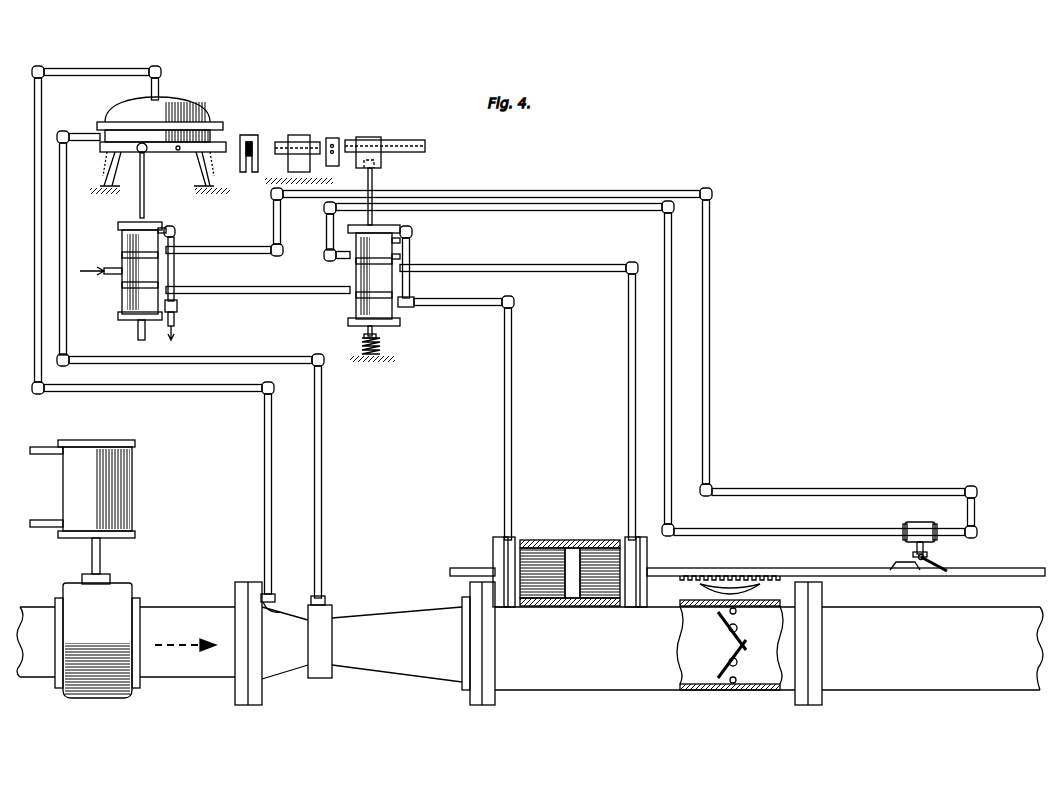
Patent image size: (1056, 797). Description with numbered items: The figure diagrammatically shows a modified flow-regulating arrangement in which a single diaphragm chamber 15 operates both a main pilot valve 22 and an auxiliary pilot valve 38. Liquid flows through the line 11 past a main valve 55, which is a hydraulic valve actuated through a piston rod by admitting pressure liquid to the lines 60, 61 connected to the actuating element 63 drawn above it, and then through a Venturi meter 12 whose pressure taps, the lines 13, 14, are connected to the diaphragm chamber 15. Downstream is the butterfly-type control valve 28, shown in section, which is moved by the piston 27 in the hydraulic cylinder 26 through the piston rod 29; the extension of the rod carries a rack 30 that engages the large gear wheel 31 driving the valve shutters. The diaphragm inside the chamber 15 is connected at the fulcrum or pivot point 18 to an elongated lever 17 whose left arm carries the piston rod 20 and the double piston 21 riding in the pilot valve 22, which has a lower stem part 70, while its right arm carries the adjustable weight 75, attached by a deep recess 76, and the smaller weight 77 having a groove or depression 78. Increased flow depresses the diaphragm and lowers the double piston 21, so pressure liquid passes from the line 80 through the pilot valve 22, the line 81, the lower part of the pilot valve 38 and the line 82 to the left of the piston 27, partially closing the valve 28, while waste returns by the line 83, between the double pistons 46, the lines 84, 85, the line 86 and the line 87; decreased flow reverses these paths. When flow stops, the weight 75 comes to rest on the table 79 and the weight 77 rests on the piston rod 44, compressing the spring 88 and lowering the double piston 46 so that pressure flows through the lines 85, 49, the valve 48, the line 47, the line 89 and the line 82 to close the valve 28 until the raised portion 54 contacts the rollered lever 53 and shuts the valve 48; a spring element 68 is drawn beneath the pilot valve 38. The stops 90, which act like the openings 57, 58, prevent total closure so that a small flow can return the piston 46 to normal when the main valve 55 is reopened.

The line 11 is at (200, 678).
The Venturi meter 12 is at (384, 668).
The line 13 is at (154, 66).
The line 14 is at (322, 545).
The diaphragm chamber 15 is at (182, 101).
The lever 17 is at (405, 140).
The fulcrum or pivot point 18 is at (176, 151).
The piston rod 20 is at (145, 196).
The double piston 21 is at (122, 254).
The pilot valve 22 is at (132, 222).
The cylinder 26 is at (536, 546).
The piston 27 is at (574, 555).
The control valve 28 is at (746, 690).
The piston rod 29 is at (666, 568).
The rack 30 is at (762, 576).
The gear wheel 31 is at (730, 584).
The pilot valve 38 is at (400, 228).
The piston rod 44 is at (378, 328).
The double piston 46 is at (400, 257).
The line 47 is at (772, 530).
The valve 48 is at (922, 528).
The line 49 is at (281, 216).
The rollered lever 53 is at (950, 570).
The raised portion 54 is at (892, 571).
The main valve 55 is at (92, 702).
The opening 57 is at (746, 637).
The opening 58 is at (746, 658).
The line 60 is at (42, 518).
The line 61 is at (46, 445).
The cylinder 63 is at (112, 496).
The spring 68 is at (382, 346).
The valve stem 70 is at (138, 336).
The weight 75 is at (258, 140).
The recess 76 is at (296, 140).
The weight 77 is at (360, 140).
The groove or depression 78 is at (374, 170).
The table 79 is at (268, 184).
The line 80 is at (112, 274).
The line 81 is at (290, 294).
The line 82 is at (512, 418).
The line 83 is at (458, 268).
The line 84 is at (340, 258).
The line 85 is at (214, 250).
The line 86 is at (174, 230).
The line 87 is at (178, 313).
The spring 88 is at (458, 308).
The line 89 is at (412, 284).
The stop 90 is at (736, 612).